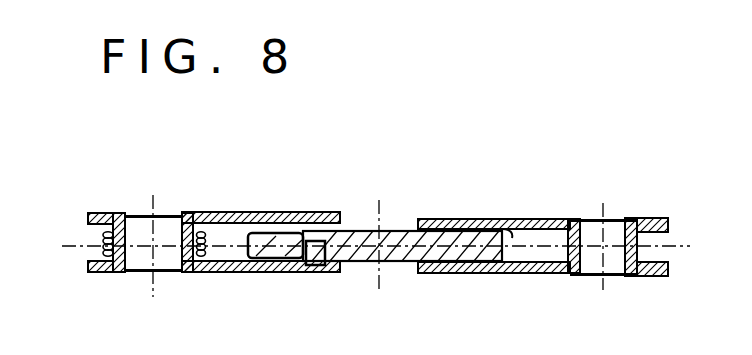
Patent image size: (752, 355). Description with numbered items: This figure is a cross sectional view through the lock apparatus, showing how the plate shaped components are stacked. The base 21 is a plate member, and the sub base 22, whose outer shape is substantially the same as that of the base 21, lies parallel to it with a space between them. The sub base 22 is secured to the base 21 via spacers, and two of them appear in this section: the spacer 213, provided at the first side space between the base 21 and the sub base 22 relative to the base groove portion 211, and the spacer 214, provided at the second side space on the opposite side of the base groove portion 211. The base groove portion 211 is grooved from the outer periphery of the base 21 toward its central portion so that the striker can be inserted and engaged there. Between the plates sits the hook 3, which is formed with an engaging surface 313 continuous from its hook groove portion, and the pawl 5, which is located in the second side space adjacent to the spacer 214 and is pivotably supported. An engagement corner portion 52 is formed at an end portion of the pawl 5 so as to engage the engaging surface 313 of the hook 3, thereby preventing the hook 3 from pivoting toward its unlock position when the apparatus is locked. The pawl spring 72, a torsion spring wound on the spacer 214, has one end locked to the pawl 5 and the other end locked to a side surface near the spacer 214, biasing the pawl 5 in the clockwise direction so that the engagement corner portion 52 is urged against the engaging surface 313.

The hook 3 is at (512, 230).
The pawl 5 is at (238, 228).
The base 21 is at (552, 275).
The sub base 22 is at (545, 220).
The engagement corner portion 52 is at (321, 266).
The pawl spring 72 is at (96, 254).
The base groove portion 211 is at (397, 223).
The spacer 213 is at (617, 276).
The spacer 214 is at (168, 262).
The engaging surface 313 is at (309, 231).